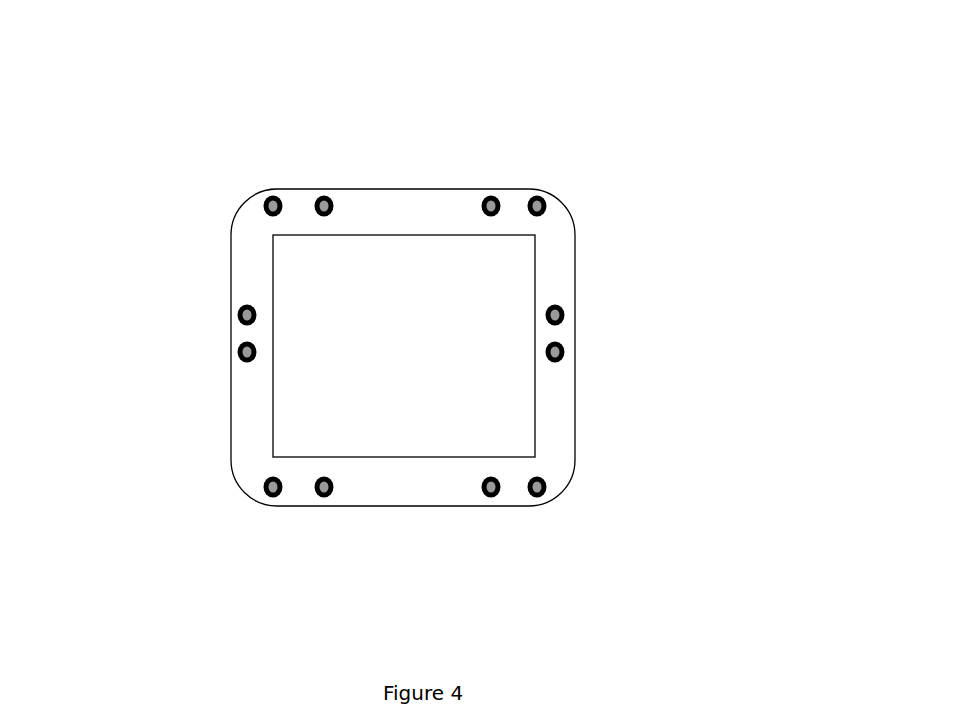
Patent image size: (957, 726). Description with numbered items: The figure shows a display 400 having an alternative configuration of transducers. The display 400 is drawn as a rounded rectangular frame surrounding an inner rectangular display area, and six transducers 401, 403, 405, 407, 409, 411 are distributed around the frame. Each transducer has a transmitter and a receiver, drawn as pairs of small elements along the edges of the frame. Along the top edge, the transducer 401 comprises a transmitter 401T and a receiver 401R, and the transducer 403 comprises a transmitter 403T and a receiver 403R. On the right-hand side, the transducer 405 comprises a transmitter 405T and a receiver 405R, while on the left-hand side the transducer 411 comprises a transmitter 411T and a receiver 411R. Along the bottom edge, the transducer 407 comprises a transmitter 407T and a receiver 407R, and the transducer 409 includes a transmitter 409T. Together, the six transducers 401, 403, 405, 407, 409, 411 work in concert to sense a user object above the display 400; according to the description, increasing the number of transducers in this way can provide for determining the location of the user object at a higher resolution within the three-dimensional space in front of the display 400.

The display 400 is at (730, 171).
The transducer 401 is at (319, 131).
The transmitter 401T is at (272, 196).
The receiver 401R is at (326, 196).
The transducer 403 is at (537, 131).
The transmitter 403T is at (490, 196).
The receiver 403R is at (539, 196).
The transducer 405 is at (634, 342).
The transmitter 405T is at (562, 311).
The receiver 405R is at (562, 358).
The transducer 407 is at (517, 558).
The transmitter 407T is at (489, 496).
The receiver 407R is at (540, 496).
The transducer 409 is at (289, 559).
The transmitter 409T is at (271, 496).
The transducer 411 is at (158, 339).
The transmitter 411T is at (240, 311).
The receiver 411R is at (240, 358).